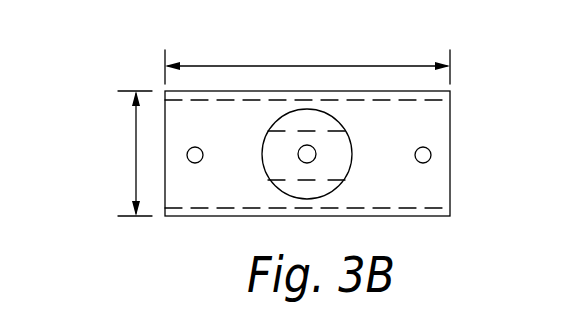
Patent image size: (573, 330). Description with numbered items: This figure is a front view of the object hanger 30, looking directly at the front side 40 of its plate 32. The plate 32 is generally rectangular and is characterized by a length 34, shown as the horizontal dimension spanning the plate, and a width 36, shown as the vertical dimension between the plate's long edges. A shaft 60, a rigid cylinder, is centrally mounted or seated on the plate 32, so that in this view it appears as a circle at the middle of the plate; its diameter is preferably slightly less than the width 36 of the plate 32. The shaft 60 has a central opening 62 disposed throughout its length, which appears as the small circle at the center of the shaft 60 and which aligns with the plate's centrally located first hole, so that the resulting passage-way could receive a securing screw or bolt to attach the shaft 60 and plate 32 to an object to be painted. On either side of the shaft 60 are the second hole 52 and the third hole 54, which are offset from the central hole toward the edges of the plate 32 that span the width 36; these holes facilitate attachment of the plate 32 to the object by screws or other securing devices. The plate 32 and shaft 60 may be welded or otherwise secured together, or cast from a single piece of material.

The object hanger 30 is at (82, 128).
The plate 32 is at (450, 118).
The length 34 is at (307, 66).
The width 36 is at (136, 153).
The front side 40 is at (438, 189).
The second hole 52 is at (199, 148).
The third hole 54 is at (432, 155).
The shaft 60 is at (285, 197).
The central opening 62 is at (312, 150).